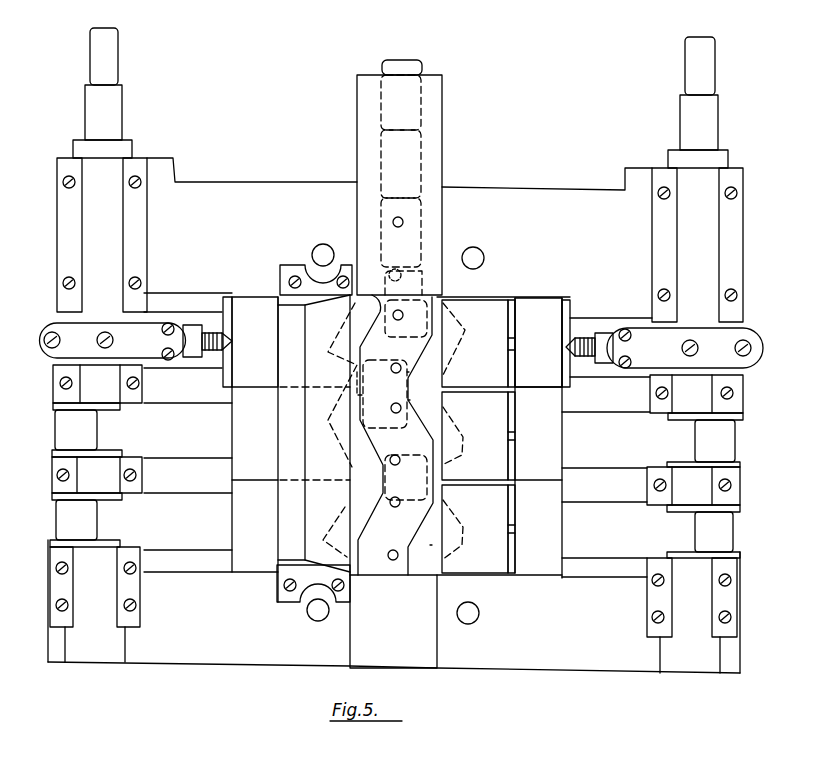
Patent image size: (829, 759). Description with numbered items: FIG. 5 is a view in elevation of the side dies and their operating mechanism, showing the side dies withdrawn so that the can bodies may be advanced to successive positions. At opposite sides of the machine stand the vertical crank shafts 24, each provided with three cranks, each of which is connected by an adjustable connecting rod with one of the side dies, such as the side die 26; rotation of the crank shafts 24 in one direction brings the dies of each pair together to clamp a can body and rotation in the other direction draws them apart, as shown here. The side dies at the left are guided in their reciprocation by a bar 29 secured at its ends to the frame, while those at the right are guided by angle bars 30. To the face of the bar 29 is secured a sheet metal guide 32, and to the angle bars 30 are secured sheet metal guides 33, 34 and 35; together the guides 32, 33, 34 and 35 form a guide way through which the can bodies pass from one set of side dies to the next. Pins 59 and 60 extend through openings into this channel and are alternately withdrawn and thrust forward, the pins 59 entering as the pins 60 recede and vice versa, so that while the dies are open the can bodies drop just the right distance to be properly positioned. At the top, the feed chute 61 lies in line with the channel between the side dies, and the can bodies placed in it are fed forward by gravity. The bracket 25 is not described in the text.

The crank shaft 24 is at (117, 123).
The clamp bracket 25 is at (402, 480).
The side die 26 is at (396, 342).
The bar 29 is at (314, 435).
The angle bar 30 is at (478, 436).
The sheet metal guide 32 is at (394, 435).
The sheet metal guide 33 is at (443, 377).
The sheet metal guide 34 is at (421, 406).
The sheet metal guide 35 is at (424, 552).
The pin 59 is at (403, 222).
The pin 60 is at (401, 276).
The feed chute 61 is at (432, 139).